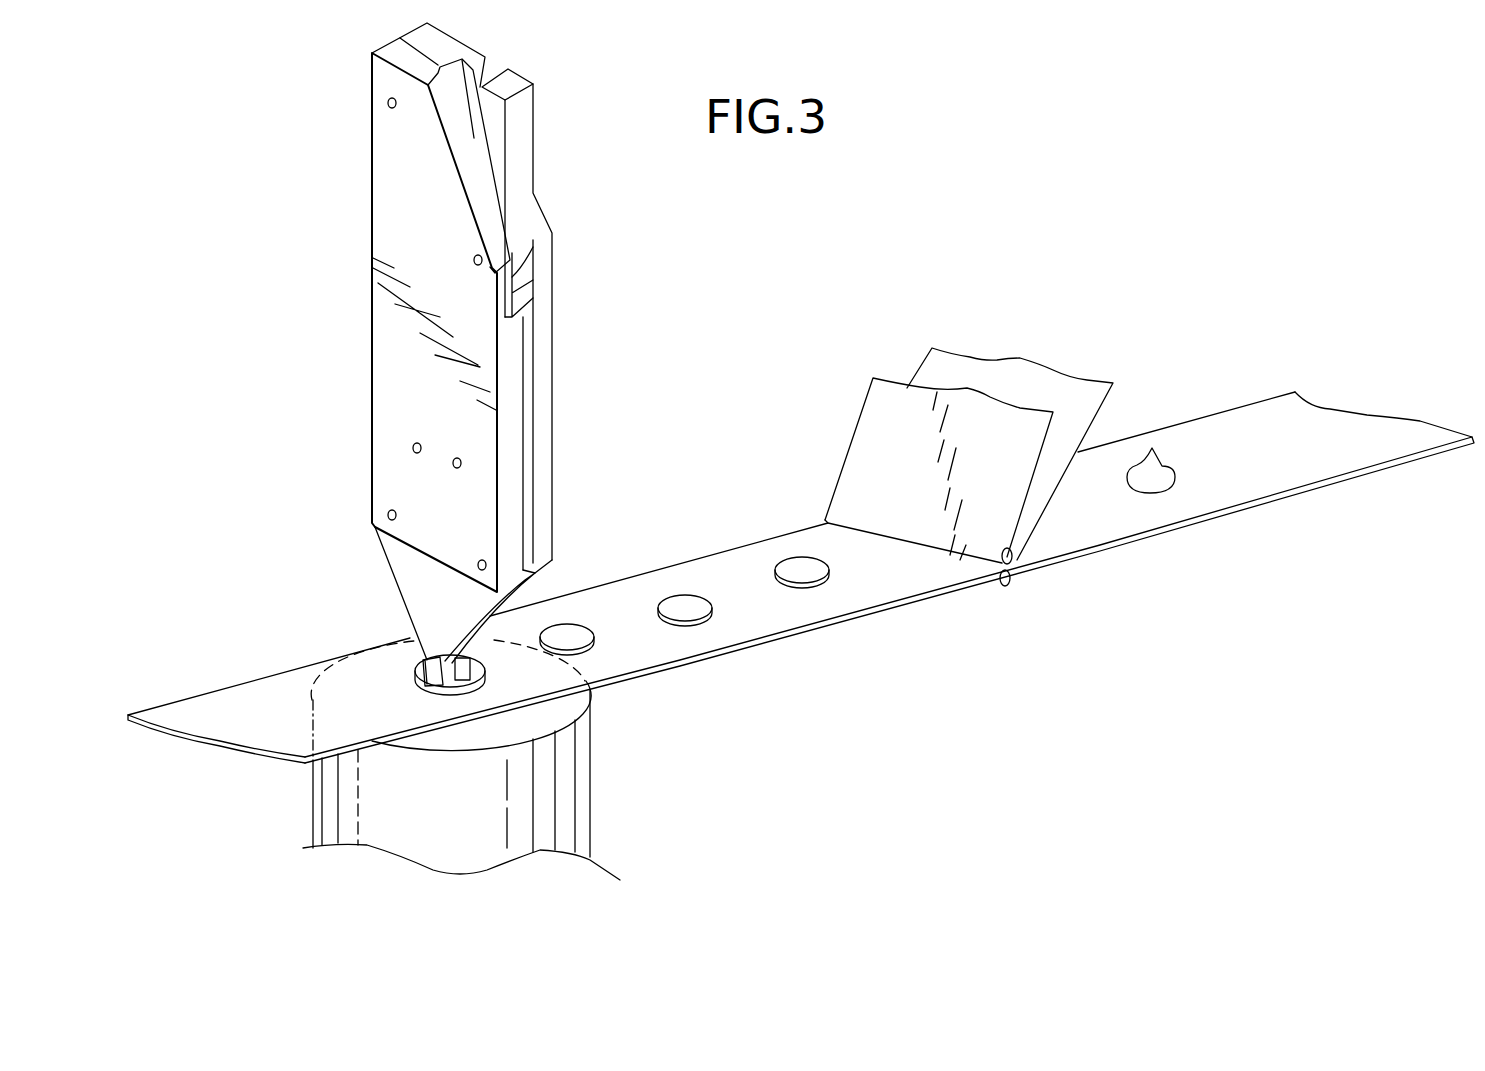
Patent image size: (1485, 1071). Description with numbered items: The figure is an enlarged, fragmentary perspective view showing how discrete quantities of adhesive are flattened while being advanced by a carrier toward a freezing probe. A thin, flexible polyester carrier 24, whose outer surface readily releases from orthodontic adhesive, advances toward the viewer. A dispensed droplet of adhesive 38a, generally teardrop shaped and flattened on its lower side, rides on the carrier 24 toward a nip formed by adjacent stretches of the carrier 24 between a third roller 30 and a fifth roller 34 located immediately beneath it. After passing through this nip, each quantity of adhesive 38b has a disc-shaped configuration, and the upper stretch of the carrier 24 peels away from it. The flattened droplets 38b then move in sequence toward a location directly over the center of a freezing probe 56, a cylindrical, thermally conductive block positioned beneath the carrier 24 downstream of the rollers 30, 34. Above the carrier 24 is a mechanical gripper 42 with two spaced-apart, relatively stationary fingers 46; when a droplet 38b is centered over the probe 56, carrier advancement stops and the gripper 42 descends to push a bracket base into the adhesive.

The carrier 24 is at (628, 590).
The third roller 30 is at (1020, 563).
The fifth roller 34 is at (1010, 583).
The adhesive 38a is at (1157, 467).
The adhesive 38b is at (787, 565).
The mechanical gripper 42 is at (580, 294).
The relatively stationary fingers 46 is at (417, 685).
The freezing probe 56 is at (578, 758).